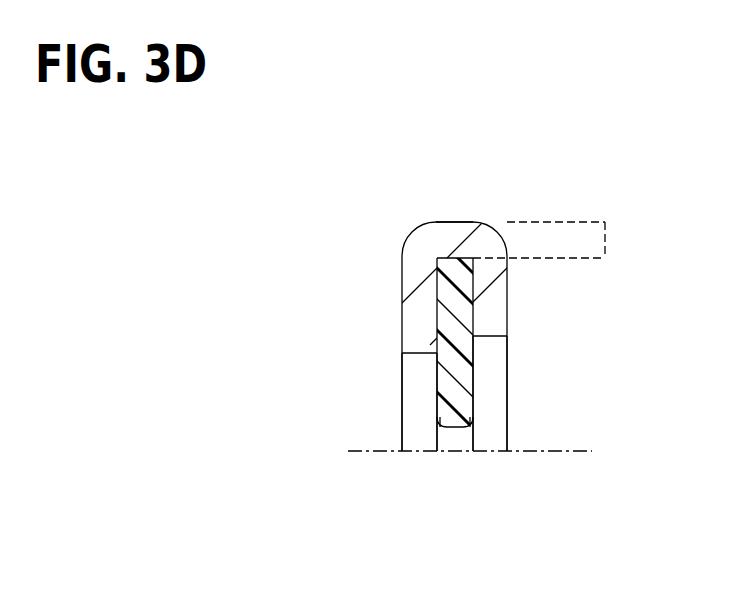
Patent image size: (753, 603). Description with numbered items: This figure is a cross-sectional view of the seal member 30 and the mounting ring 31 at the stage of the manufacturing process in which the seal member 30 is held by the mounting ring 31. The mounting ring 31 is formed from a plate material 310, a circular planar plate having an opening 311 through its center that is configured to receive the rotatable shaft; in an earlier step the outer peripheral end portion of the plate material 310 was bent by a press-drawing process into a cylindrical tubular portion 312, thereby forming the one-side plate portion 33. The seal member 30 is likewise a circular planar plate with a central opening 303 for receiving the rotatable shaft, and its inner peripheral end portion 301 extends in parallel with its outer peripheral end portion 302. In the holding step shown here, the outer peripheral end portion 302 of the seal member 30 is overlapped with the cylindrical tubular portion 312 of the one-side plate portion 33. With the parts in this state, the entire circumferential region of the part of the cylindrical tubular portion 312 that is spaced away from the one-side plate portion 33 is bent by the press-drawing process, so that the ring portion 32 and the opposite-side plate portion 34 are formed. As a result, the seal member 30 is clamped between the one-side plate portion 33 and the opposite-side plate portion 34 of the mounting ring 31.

The seal member 30 is at (475, 387).
The mounting ring 31 is at (406, 245).
The ring portion 32 is at (448, 232).
The one-side plate portion 33 is at (415, 337).
The opposite-side plate portion 34 is at (498, 293).
The inner peripheral end portion 301 is at (458, 412).
The outer peripheral end portion 302 is at (455, 268).
The opening 303 is at (452, 440).
The plate material 310 is at (605, 222).
The opening 311 is at (415, 403).
The cylindrical tubular portion 312 is at (545, 320).